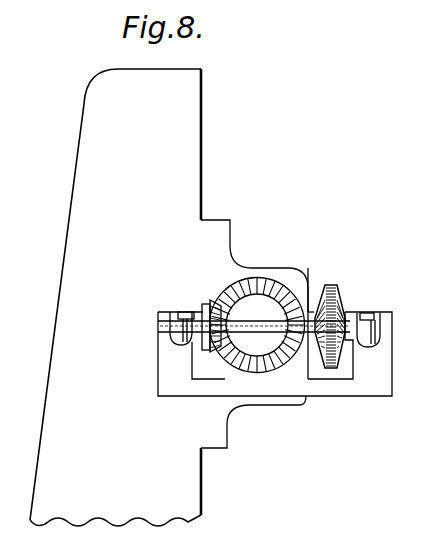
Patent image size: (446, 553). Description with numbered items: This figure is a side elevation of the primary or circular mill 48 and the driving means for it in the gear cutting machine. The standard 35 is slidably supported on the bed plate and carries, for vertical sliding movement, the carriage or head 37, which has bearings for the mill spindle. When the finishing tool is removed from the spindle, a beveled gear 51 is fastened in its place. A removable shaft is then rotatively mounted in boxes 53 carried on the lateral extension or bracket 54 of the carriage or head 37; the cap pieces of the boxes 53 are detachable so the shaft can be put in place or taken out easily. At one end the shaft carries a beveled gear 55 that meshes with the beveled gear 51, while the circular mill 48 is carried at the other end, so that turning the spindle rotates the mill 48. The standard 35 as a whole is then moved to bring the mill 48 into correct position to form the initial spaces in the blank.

The standard 35 is at (115, 297).
The carriage or head 37 is at (240, 236).
The circular mill 48 is at (341, 289).
The beveled gear 51 is at (262, 300).
The boxes 53 is at (160, 316).
The lateral extension or bracket 54 is at (353, 397).
The beveled gear 55 is at (206, 307).